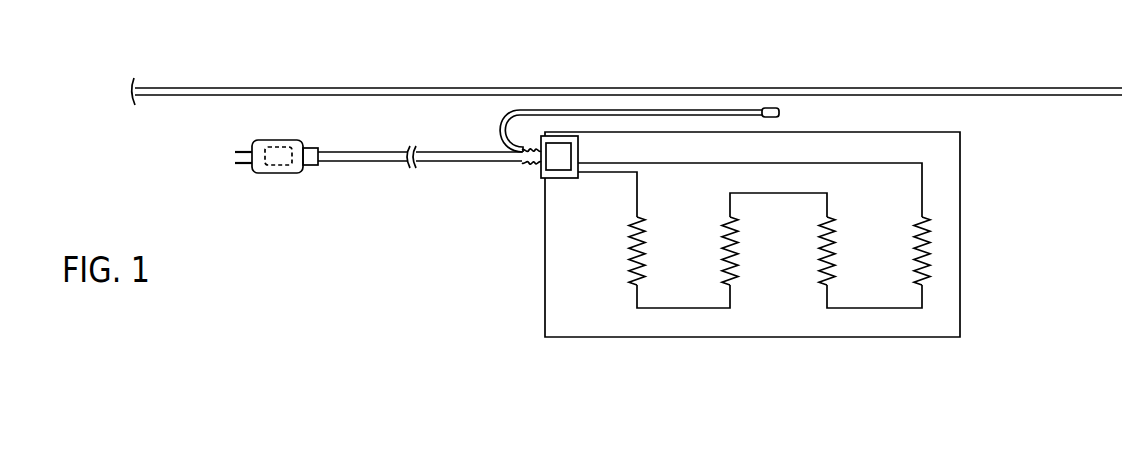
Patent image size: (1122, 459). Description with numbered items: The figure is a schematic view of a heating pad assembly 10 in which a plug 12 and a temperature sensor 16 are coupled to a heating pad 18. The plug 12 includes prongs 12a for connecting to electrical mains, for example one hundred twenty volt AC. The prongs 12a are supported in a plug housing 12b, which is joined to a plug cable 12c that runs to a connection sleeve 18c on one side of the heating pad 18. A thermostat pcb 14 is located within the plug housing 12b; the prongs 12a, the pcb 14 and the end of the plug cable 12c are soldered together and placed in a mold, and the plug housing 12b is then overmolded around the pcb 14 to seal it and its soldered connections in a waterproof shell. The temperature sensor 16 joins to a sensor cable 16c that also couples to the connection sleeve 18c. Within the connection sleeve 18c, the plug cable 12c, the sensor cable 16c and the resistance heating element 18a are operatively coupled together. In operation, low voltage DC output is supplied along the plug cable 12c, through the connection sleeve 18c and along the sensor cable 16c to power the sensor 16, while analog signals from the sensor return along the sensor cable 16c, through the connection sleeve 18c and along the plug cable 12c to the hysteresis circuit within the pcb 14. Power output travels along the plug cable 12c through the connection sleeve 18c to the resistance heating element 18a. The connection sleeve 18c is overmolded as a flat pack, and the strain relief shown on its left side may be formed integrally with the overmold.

The heating pad assembly 10 is at (490, 314).
The plug 12 is at (253, 83).
The prongs 12a is at (244, 166).
The plug housing 12b is at (272, 174).
The plug cable 12c is at (442, 161).
The thermostat pcb 14 is at (282, 152).
The temperature sensor 16 is at (784, 112).
The sensor cable 16c is at (592, 110).
The heating pad 18 is at (878, 337).
The resistance heating element 18a is at (823, 272).
The connection sleeve 18c is at (540, 178).